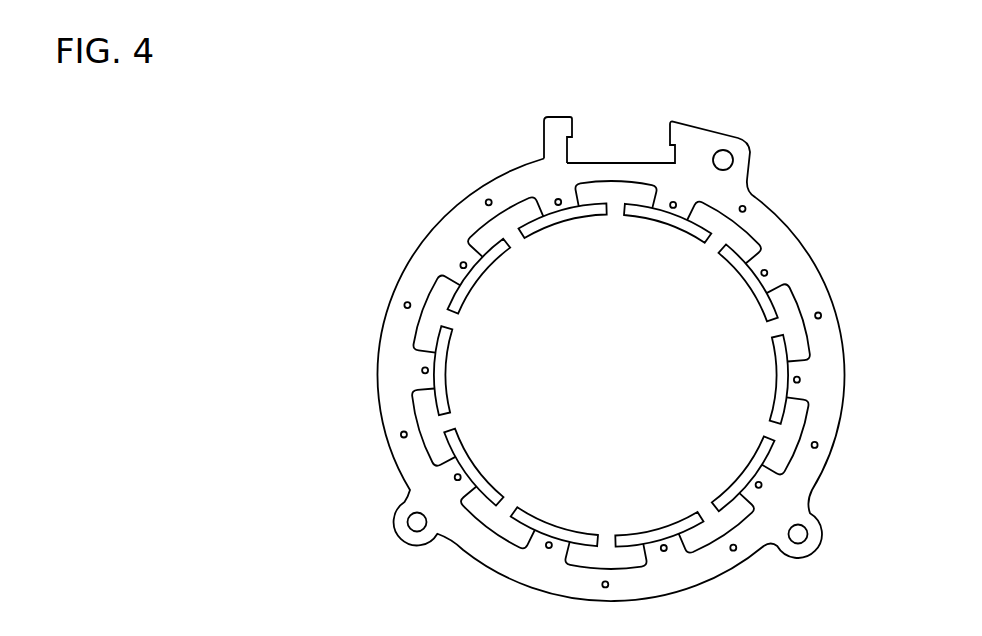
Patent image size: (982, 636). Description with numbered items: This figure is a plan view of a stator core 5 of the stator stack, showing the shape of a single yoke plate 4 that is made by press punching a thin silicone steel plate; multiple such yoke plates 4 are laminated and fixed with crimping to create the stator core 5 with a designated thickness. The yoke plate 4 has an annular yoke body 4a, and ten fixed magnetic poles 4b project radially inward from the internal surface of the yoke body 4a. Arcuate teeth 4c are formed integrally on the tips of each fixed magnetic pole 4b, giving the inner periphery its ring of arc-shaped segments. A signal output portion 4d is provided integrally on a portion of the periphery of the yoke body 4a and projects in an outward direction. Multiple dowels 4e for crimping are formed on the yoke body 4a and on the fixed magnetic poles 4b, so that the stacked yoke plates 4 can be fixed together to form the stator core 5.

The yoke plate 4 is at (843, 390).
The yoke body 4a is at (822, 289).
The fixed magnetic pole 4b is at (795, 370).
The arcuate tooth 4c is at (772, 288).
The signal output portion 4d is at (555, 133).
The dowel 4e is at (823, 314).
The stator core 5 is at (808, 243).